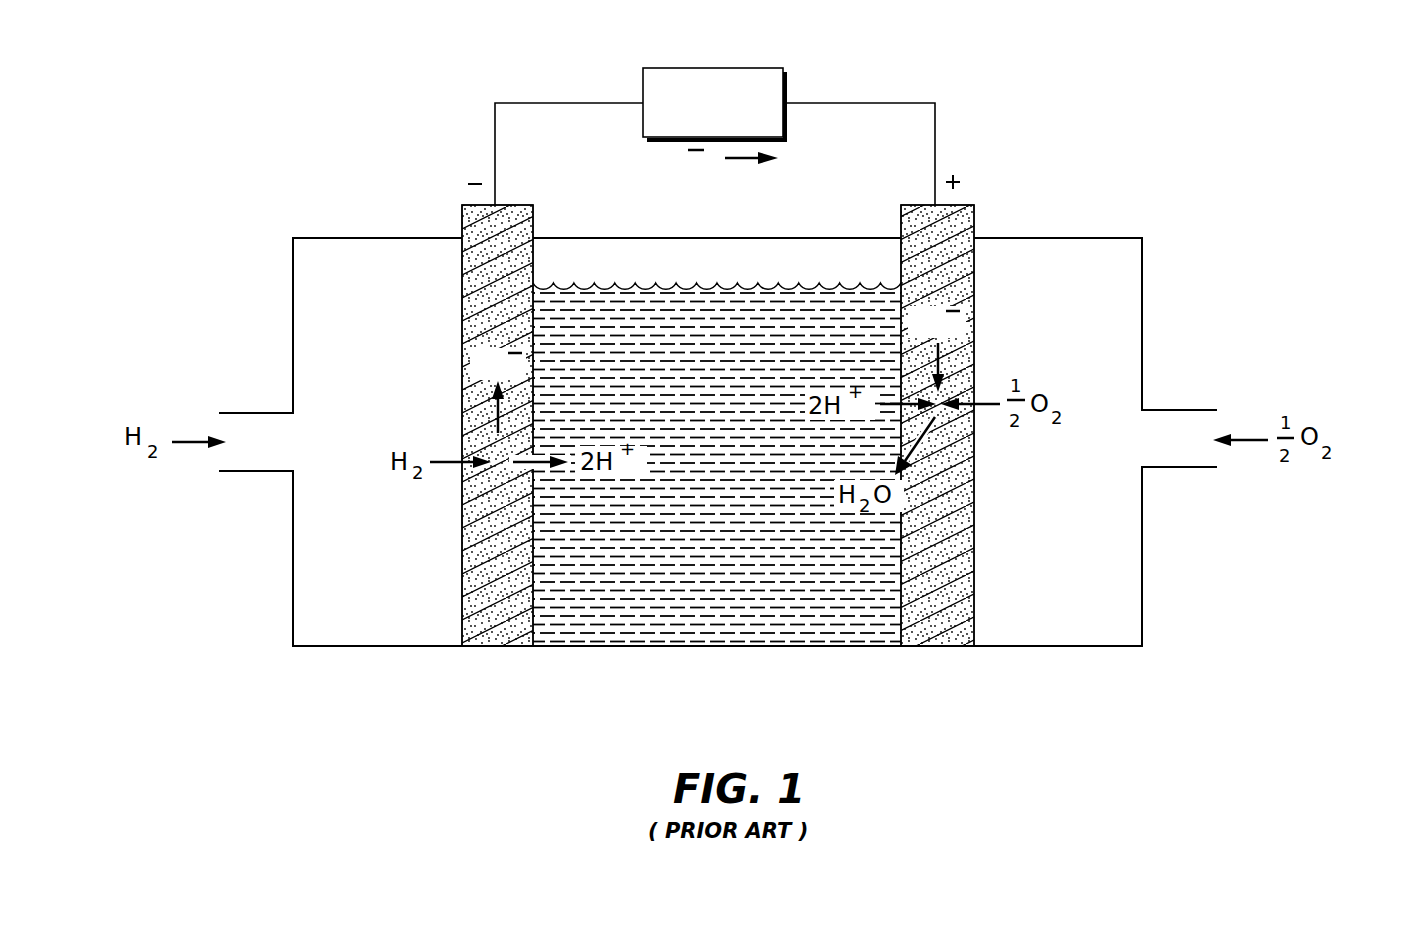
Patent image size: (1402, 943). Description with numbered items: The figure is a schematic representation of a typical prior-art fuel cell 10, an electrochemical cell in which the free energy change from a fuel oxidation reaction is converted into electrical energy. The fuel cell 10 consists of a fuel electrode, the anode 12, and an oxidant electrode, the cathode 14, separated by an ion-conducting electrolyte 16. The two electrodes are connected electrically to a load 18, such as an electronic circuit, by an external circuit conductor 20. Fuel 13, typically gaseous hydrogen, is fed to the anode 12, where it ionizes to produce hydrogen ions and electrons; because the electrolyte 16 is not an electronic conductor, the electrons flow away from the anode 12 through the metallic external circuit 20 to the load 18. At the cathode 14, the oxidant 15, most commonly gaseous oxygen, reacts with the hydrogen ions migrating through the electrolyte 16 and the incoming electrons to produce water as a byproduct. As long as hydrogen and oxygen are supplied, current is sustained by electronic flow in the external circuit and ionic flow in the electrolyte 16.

The fuel cell 10 is at (228, 702).
The anode 12 is at (500, 648).
The fuel 13 is at (122, 415).
The cathode 14 is at (948, 648).
The oxidant 15 is at (1325, 418).
The electrolyte 16 is at (722, 648).
The load 18 is at (673, 66).
The external circuit 20 is at (493, 133).